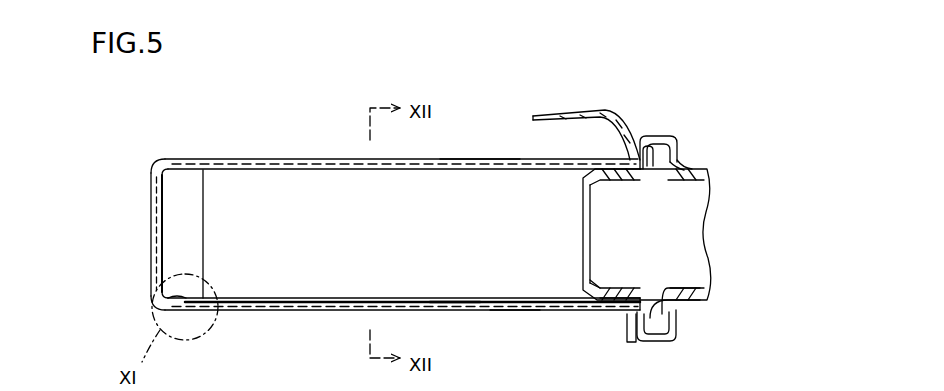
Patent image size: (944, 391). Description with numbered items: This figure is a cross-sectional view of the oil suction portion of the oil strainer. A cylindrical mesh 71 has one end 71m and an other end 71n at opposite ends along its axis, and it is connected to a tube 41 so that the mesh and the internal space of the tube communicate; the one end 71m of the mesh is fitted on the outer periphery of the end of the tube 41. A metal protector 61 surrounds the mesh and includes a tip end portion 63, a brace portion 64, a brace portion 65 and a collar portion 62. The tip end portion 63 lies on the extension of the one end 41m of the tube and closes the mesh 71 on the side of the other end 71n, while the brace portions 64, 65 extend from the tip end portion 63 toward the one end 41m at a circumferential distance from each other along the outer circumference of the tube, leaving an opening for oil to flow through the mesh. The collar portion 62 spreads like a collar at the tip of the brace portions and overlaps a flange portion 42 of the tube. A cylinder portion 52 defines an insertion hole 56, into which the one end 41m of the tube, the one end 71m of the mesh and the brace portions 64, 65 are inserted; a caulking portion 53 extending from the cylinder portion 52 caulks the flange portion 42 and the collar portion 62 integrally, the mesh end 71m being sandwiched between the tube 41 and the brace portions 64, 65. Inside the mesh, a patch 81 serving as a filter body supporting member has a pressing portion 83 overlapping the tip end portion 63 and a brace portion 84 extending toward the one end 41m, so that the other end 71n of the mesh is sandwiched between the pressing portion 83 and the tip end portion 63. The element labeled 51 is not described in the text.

The tube 41 is at (693, 166).
The one end of tube 41m is at (615, 296).
The flange portion 42 is at (678, 158).
The first engagement piece 51 is at (588, 106).
The cylinder portion 52 is at (629, 332).
The caulking portion 53 is at (657, 136).
The insertion hole 56 is at (655, 292).
The protector 61 is at (277, 156).
The collar portion 62 is at (638, 152).
The tip end portion 63 is at (155, 213).
The brace portion 64 is at (511, 304).
The brace portion 65 is at (478, 158).
The mesh 71 is at (298, 311).
The one end of mesh 71m is at (613, 304).
The other end of mesh 71n is at (177, 310).
The patch 81 is at (156, 167).
The pressing portion 83 is at (157, 243).
The brace portion 84 is at (462, 303).